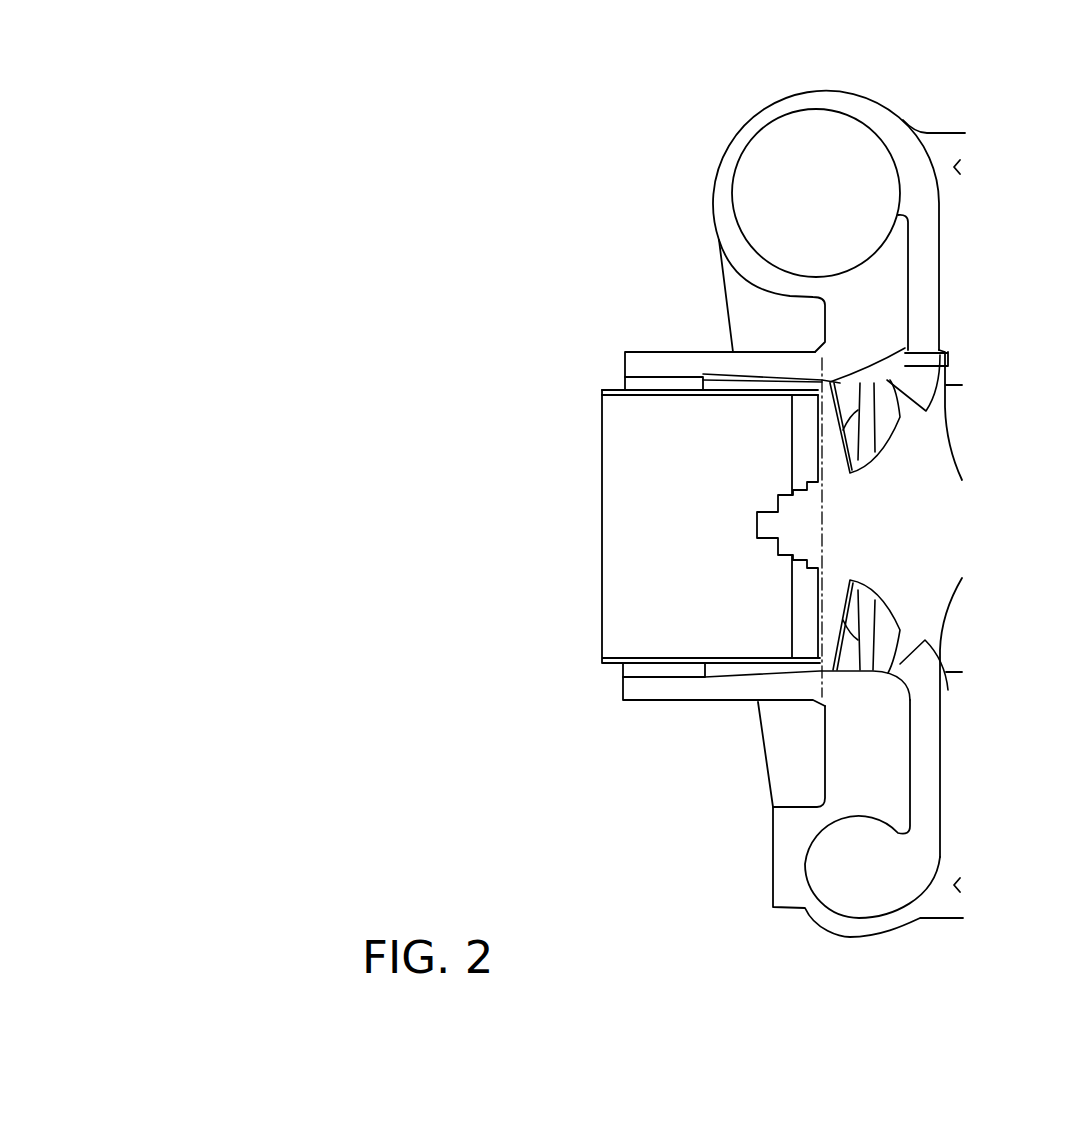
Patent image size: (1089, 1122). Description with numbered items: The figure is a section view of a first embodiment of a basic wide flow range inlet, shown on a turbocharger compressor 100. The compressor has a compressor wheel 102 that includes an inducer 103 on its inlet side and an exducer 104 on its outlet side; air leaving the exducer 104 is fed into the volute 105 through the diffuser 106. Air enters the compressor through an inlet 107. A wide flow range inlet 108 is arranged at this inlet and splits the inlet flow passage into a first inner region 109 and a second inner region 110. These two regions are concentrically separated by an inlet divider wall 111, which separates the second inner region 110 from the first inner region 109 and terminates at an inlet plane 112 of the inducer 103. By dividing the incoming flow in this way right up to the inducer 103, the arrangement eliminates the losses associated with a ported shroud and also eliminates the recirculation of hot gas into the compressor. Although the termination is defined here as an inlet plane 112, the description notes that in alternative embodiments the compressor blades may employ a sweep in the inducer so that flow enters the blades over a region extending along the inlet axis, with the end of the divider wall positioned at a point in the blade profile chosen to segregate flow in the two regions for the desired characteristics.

The turbocharger compressor 100 is at (708, 104).
The compressor wheel 102 is at (877, 523).
The inducer 103 is at (828, 706).
The exducer 104 is at (937, 697).
The volute 105 is at (800, 208).
The diffuser 106 is at (926, 284).
The inlet 107 is at (618, 517).
The wide flow range inlet 108 is at (590, 312).
The first inner region 109 is at (690, 483).
The second inner region 110 is at (668, 383).
The inlet divider wall 111 is at (623, 392).
The inlet plane 112 is at (820, 648).